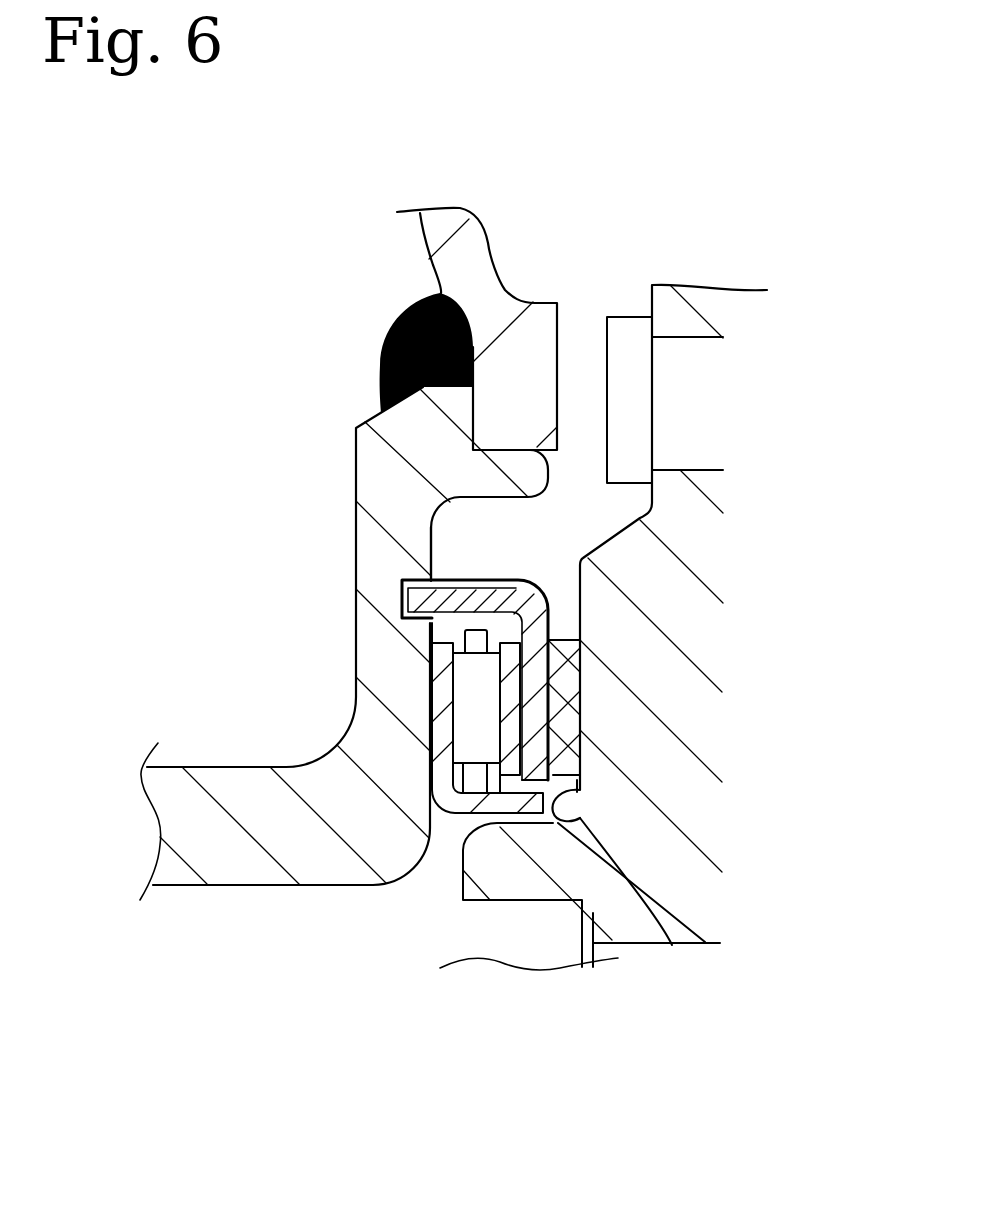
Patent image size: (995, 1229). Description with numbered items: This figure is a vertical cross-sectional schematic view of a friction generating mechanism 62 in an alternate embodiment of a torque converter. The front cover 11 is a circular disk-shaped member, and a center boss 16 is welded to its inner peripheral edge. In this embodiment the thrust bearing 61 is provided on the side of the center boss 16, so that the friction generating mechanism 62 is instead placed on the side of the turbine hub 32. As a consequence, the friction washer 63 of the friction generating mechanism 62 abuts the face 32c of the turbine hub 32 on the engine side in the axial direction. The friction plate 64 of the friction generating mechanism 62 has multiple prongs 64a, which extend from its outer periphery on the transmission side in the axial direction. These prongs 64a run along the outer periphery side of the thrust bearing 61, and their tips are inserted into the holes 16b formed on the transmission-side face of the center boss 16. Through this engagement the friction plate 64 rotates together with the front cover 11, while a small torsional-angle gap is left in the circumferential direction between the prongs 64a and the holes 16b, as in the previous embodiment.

The front cover 11 is at (467, 278).
The center boss 16 is at (373, 650).
The holes 16b is at (393, 560).
The turbine hub 32 is at (670, 663).
The face of the turbine hub 32c is at (672, 945).
The thrust bearing 61 is at (431, 884).
The friction generating mechanism 62 is at (549, 595).
The friction washer 63 is at (555, 702).
The friction plate 64 is at (580, 733).
The prongs 64a is at (493, 597).